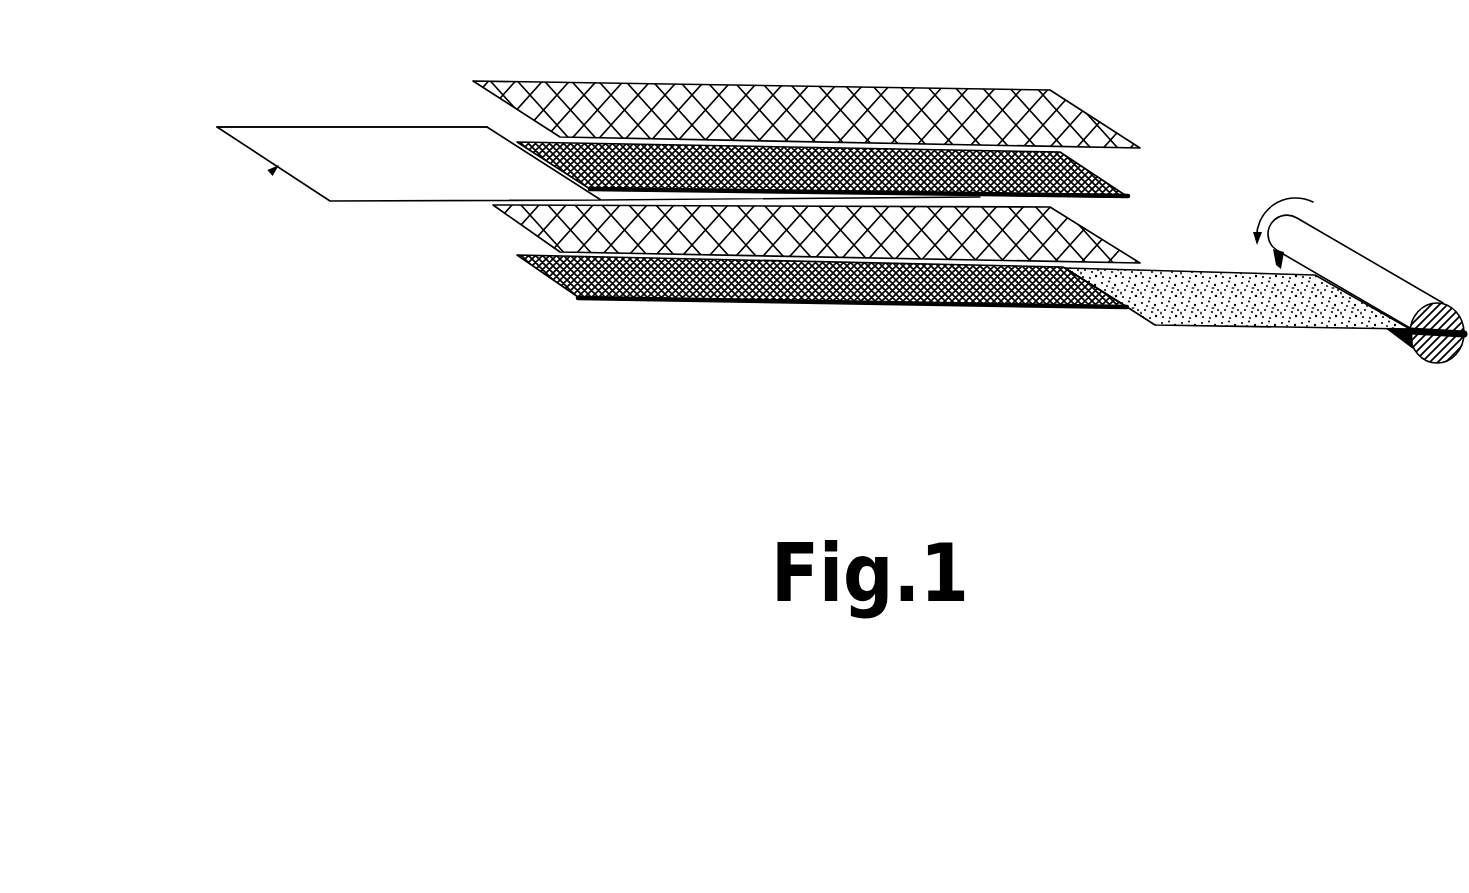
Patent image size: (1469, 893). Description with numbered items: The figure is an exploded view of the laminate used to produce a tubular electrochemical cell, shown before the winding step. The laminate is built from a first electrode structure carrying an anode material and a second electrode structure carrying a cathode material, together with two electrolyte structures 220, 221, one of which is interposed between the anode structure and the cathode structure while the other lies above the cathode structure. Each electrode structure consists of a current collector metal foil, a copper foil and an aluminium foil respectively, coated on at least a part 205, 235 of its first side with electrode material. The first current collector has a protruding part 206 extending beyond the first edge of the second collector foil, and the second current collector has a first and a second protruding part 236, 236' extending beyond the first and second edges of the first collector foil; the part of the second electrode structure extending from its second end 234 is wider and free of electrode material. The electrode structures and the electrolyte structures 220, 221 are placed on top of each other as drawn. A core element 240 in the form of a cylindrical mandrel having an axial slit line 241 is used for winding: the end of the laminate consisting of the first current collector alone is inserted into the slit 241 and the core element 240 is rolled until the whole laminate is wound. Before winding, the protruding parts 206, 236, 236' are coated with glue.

The coated part of first current collector 205 is at (813, 286).
The protruding part of first current collector 206 is at (1202, 314).
The electrolyte structure 220 is at (1100, 248).
The electrolyte structure 221 is at (815, 120).
The second end of second electrode structure 234 is at (273, 171).
The coated part of second current collector 235 is at (1100, 180).
The first protruding part of second current collector 236 is at (409, 212).
The second protruding part of second current collector 236' is at (352, 79).
The core element 240 is at (1358, 263).
The axial slit line 241 is at (1412, 346).